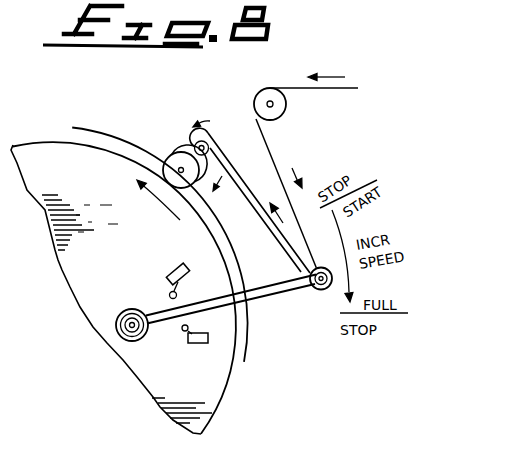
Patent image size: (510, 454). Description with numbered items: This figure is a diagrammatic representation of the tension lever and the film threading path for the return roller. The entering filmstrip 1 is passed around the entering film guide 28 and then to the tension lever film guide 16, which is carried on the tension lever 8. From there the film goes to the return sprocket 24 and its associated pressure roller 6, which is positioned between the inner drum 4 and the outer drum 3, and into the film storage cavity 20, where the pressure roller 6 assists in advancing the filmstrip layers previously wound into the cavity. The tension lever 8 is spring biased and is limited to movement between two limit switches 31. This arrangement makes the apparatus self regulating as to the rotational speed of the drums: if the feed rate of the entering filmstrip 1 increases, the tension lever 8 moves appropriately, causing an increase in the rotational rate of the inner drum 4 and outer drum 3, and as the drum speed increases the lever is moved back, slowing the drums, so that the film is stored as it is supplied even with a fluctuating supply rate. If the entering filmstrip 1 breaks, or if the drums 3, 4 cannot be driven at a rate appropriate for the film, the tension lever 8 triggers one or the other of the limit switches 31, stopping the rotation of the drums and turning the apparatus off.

The entering filmstrip 1 is at (343, 89).
The outer drum 3 is at (115, 137).
The inner drum 4 is at (42, 155).
The pressure roller 6 is at (161, 140).
The tension lever 8 is at (268, 293).
The tension lever film guide 16 is at (318, 295).
The film storage cavity 20 is at (92, 137).
The return sprocket 24 is at (212, 136).
The entering film guide 28 is at (266, 90).
The limit switches 31 is at (173, 265).